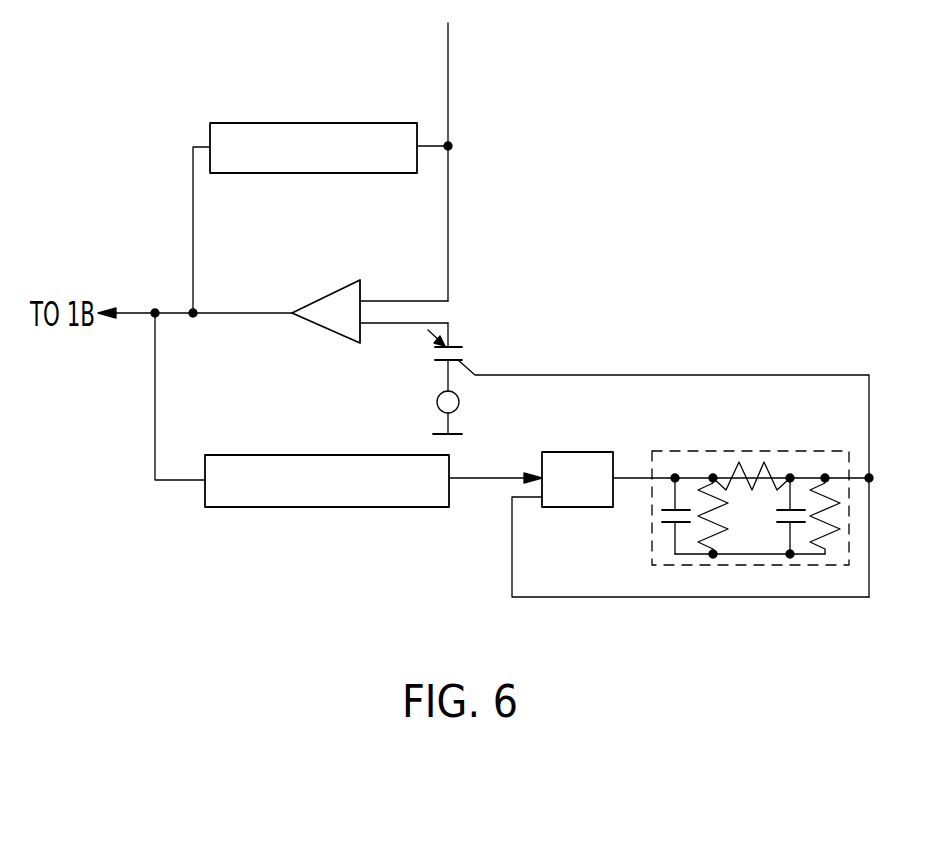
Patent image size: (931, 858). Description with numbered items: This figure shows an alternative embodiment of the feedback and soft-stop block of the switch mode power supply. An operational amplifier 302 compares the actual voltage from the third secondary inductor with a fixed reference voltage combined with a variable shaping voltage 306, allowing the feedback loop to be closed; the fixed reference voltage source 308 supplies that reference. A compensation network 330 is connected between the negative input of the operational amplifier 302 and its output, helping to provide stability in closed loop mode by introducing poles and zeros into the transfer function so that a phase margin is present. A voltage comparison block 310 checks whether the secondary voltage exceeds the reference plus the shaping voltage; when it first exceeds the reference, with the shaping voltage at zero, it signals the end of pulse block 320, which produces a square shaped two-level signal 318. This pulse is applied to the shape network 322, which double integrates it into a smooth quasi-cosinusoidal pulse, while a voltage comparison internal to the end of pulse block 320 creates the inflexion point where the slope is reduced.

The compensation network 330 is at (302, 123).
The operational amplifier 302 is at (352, 292).
The Vshape 306 is at (452, 346).
The reference voltage source Vref 308 is at (459, 405).
The voltage comparison block 310 is at (268, 456).
The end of pulse block (EOP block) 320 is at (596, 453).
The square shaped signal 318 is at (625, 478).
The shape network 322 is at (697, 451).